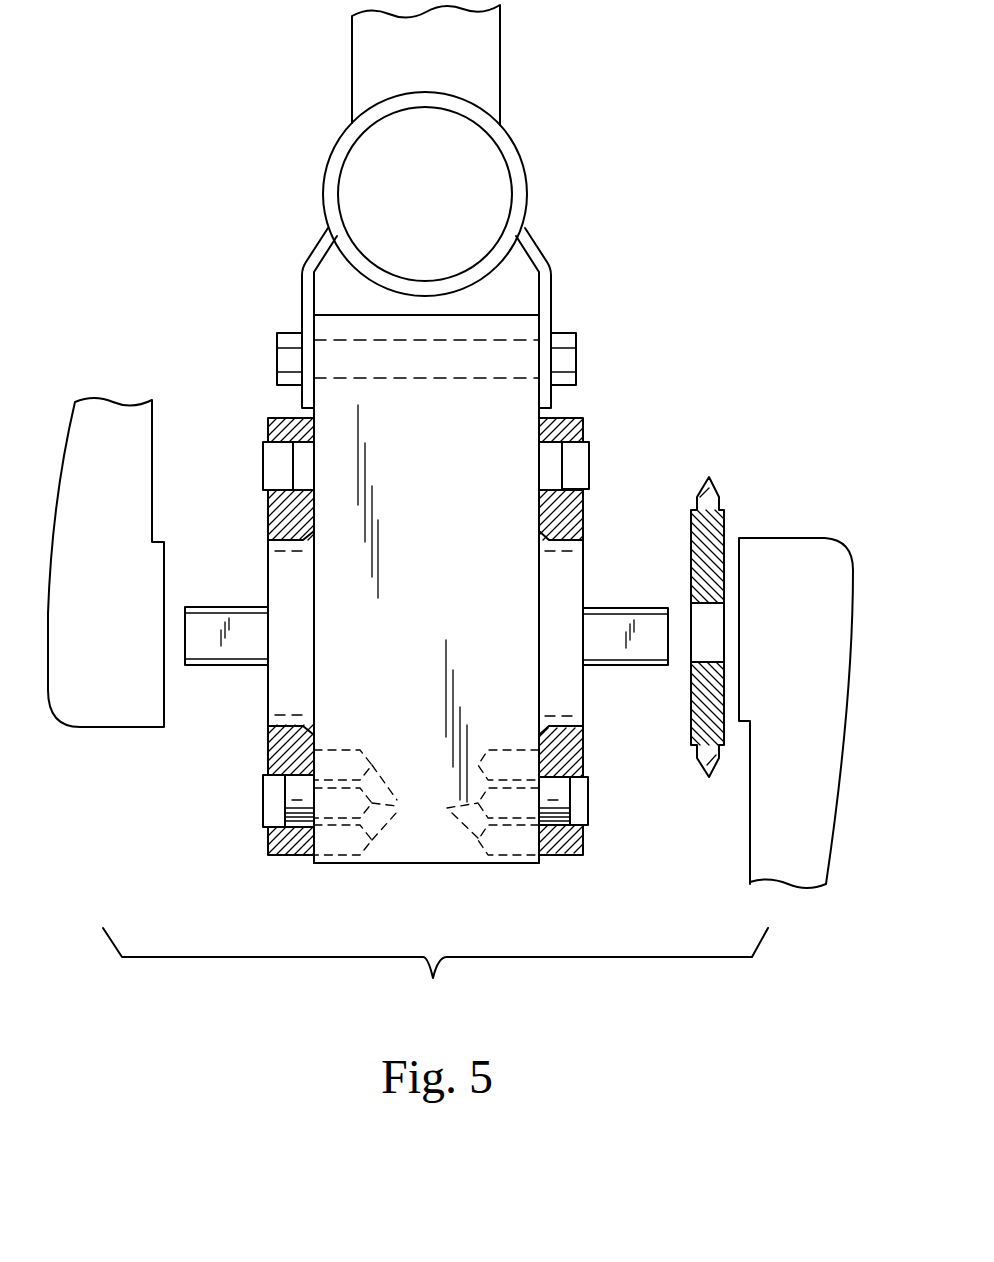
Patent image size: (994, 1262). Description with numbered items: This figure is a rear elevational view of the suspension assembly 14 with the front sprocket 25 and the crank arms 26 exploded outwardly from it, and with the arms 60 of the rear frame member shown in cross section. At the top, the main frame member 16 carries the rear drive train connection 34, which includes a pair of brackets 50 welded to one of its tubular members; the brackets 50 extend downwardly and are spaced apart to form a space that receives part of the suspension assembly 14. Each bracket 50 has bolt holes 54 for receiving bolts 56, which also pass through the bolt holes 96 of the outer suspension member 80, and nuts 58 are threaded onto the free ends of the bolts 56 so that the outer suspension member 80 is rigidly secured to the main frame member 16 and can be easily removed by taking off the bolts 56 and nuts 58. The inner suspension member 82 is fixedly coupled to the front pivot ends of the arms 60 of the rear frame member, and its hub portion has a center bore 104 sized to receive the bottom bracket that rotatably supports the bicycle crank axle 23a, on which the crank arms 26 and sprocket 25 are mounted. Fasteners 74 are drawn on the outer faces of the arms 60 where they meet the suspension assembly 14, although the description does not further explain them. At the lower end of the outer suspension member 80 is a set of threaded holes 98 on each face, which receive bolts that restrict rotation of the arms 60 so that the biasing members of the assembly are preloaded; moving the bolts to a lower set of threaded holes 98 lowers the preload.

The suspension assembly 14 is at (600, 398).
The main frame member 16 is at (512, 49).
The bicycle crank axle 23a is at (193, 607).
The front chain ring or sprocket 25 is at (726, 516).
The crank arms 26 is at (153, 445).
The rear drive train connection 34 is at (540, 212).
The brackets 50 is at (301, 268).
The bolt holes 54 is at (300, 330).
The bolts 56 is at (577, 335).
The nuts 58 is at (277, 338).
The arms 60 is at (258, 755).
The fastening nut 74 is at (263, 473).
The outer suspension member 80 is at (500, 875).
The inner suspension member 82 is at (596, 708).
The bolt holes 96 is at (480, 380).
The threaded holes 98 is at (500, 745).
The center bore 104 is at (577, 556).